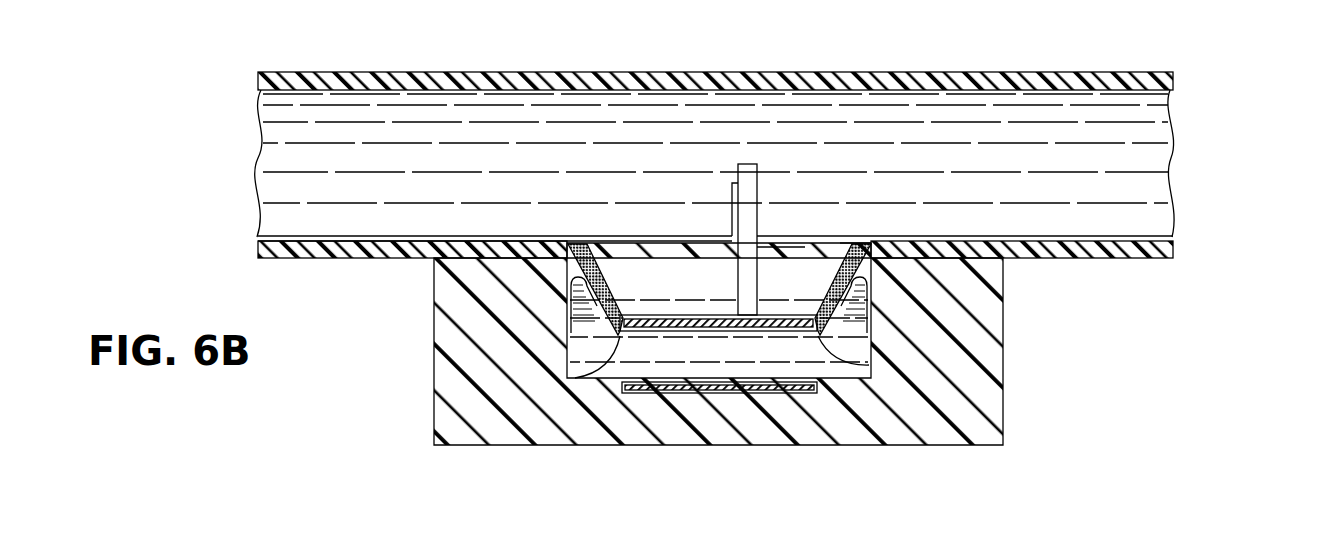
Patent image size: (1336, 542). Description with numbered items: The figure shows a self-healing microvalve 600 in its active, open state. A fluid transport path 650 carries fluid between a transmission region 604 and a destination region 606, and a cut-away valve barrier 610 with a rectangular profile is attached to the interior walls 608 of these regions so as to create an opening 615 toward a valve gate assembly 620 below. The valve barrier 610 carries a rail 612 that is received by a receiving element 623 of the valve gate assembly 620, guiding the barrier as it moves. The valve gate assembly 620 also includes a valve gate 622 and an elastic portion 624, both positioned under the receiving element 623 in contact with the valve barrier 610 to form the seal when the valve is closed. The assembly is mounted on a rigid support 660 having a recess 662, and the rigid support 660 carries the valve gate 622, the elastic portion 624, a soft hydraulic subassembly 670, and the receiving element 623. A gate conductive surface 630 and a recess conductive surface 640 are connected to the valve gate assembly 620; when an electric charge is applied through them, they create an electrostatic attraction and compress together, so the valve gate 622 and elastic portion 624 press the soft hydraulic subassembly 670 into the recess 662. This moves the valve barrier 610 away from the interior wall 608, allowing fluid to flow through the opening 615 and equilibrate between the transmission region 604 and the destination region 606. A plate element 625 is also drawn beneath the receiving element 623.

The self-healing microvalve 600 is at (220, 69).
The transmission region 604 is at (290, 213).
The destination region 606 is at (1150, 222).
The interior walls 608 is at (1128, 85).
The valve barrier 610 is at (748, 202).
The rail 612 is at (736, 260).
The opening 615 is at (735, 132).
The valve gate assembly 620 is at (872, 262).
The valve gate 622 is at (847, 363).
The receiving element 623 is at (733, 226).
The elastic portion 624 is at (567, 281).
The sensing plate 625 is at (760, 317).
The gate conductive surface 630 is at (620, 383).
The recess conductive surface 640 is at (653, 393).
The fluid transport path 650 is at (286, 117).
The rigid support 660 is at (468, 361).
The recess 662 is at (867, 373).
The soft hydraulic subassembly 670 is at (798, 347).